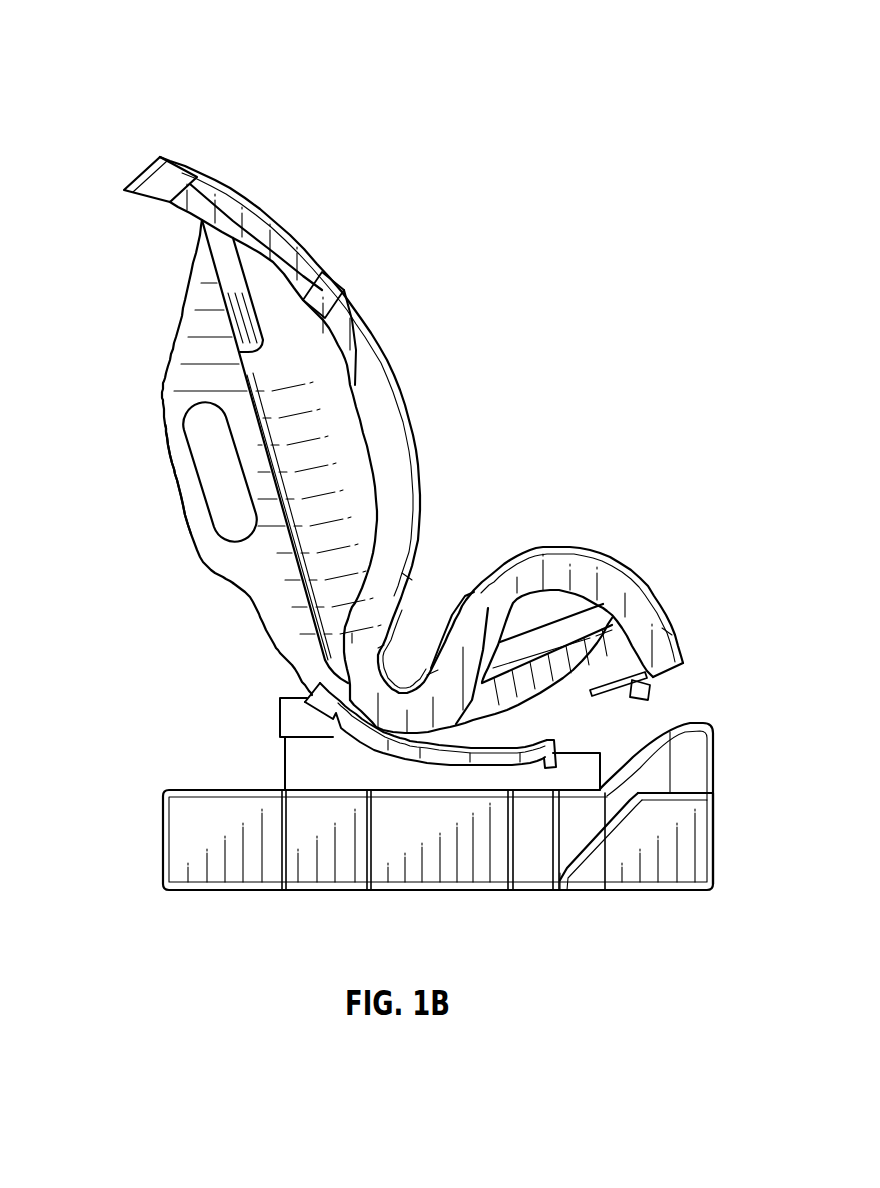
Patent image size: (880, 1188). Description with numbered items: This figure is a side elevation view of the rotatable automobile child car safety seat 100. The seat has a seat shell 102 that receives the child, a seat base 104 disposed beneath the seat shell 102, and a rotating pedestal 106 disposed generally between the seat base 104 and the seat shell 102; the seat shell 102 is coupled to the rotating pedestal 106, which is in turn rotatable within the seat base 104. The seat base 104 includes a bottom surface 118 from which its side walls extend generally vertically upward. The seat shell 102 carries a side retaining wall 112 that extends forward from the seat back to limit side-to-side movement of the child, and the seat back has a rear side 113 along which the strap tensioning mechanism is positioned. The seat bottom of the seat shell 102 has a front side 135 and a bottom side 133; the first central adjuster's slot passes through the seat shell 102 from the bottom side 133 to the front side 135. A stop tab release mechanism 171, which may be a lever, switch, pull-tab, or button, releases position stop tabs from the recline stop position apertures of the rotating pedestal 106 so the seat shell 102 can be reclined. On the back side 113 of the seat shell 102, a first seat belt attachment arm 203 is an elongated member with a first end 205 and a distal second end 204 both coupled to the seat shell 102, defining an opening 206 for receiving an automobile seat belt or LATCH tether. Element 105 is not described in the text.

The rotatable automobile child car safety seat 100 is at (592, 58).
The seat shell 102 is at (162, 157).
The seat base 104 is at (163, 845).
The curved strip 105 is at (430, 725).
The rotating pedestal 106 is at (285, 763).
The side retaining wall 112 is at (383, 347).
The rear side of the seat back 113 is at (220, 247).
The bottom surface 118 is at (450, 890).
The bottom side of the seat bottom 133 is at (615, 695).
The front side of the seat bottom 135 is at (683, 665).
The stop tab release mechanism 171 is at (650, 692).
The first seat belt attachment arm 203 is at (190, 483).
The distal second end 204 is at (177, 397).
The first end 205 is at (255, 597).
The opening 206 is at (207, 440).